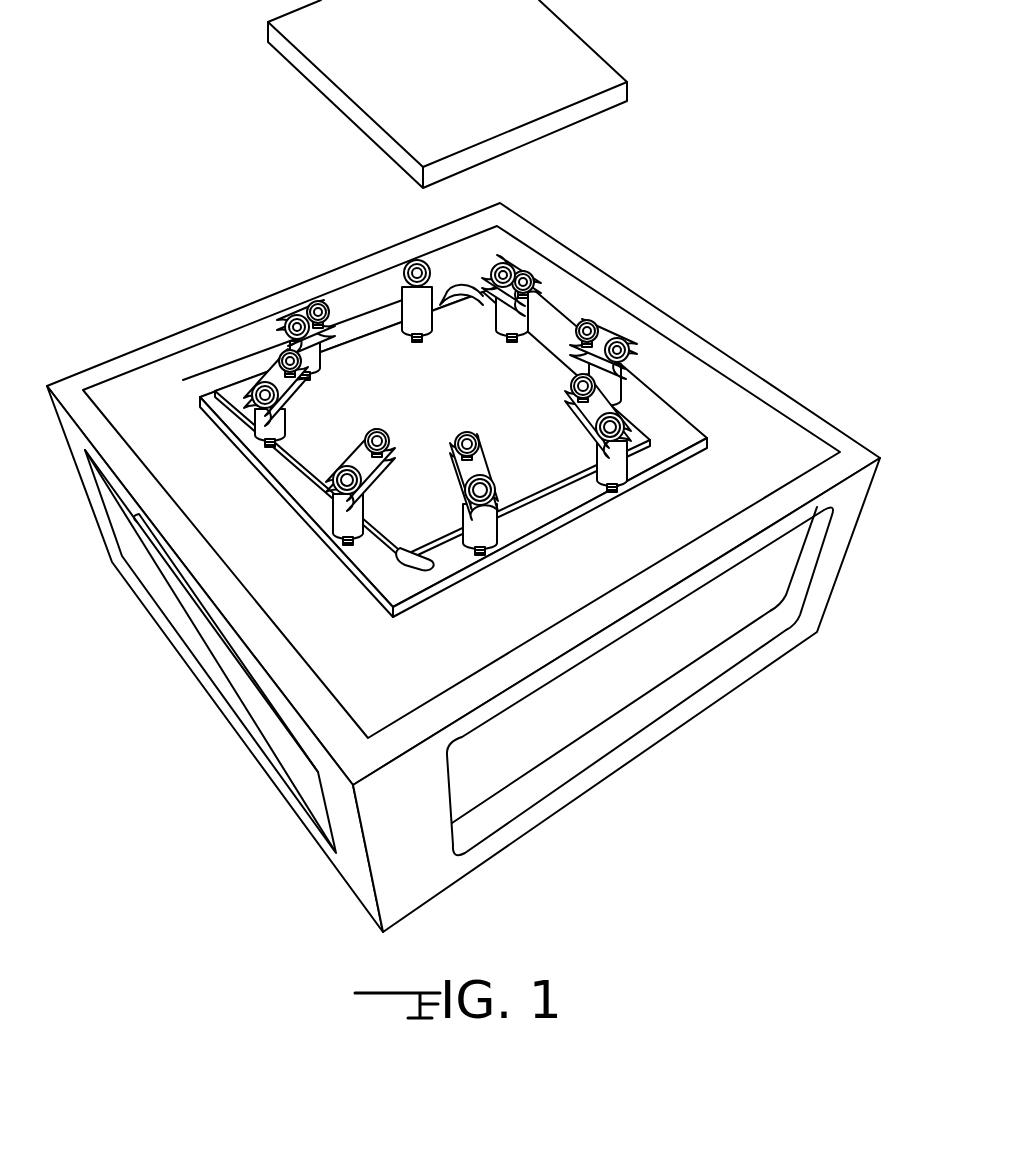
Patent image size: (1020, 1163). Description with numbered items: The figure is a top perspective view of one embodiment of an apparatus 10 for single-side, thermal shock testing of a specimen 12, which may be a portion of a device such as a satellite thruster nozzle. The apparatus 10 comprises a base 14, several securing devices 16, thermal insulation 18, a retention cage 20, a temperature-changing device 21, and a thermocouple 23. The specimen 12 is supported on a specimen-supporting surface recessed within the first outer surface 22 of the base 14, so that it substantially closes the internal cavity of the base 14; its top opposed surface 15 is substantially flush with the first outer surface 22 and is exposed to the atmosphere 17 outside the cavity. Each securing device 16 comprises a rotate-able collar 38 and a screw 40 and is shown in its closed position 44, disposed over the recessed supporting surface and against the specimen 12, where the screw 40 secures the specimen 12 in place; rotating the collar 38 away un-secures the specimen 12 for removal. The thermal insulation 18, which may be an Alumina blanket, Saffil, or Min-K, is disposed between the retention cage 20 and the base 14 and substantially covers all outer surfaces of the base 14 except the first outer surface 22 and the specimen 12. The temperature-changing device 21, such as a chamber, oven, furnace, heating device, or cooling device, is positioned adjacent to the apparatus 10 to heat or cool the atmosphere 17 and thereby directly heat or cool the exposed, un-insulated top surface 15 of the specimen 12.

The apparatus 10 is at (463, 466).
The specimen 12 is at (520, 360).
The base 14 is at (428, 447).
The top opposed surface 15 is at (458, 348).
The securing device 16 is at (468, 396).
The atmosphere 17 is at (265, 237).
The thermal insulation 18 is at (497, 240).
The retention cage 20 is at (463, 542).
The temperature-changing device 21 is at (607, 52).
The first outer surface 22 is at (585, 508).
The thermocouple 23 is at (220, 622).
The rotate-able collar 38 is at (327, 503).
The screw 40 is at (405, 558).
The closed position 44 is at (468, 396).